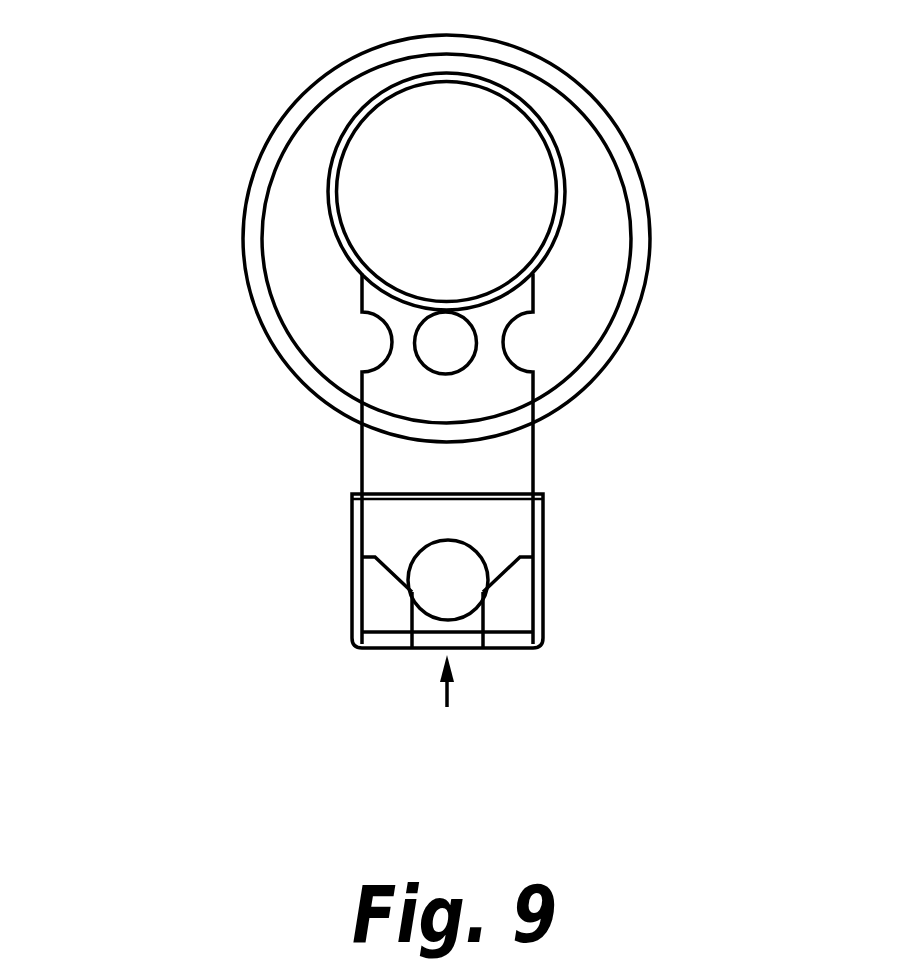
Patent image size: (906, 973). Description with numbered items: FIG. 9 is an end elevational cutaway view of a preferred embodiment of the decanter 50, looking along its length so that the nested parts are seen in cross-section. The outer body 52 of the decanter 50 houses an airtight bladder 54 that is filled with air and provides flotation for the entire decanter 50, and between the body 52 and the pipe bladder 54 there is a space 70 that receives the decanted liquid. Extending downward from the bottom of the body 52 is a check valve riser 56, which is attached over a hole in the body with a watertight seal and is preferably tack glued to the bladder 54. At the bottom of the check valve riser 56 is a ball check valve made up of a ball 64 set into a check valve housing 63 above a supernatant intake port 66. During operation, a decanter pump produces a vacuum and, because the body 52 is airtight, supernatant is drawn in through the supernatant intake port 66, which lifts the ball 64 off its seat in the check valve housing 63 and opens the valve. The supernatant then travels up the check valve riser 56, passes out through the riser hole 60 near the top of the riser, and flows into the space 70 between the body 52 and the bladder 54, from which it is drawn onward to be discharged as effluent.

The decanter 50 is at (702, 152).
The body 52 is at (232, 208).
The bladder 54 is at (463, 192).
The check valve riser 56 is at (463, 482).
The riser hole 60 is at (462, 357).
The check valve housing 63 is at (375, 614).
The ball 64 is at (463, 596).
The supernatant intake port 66 is at (446, 702).
The space 70 is at (327, 292).